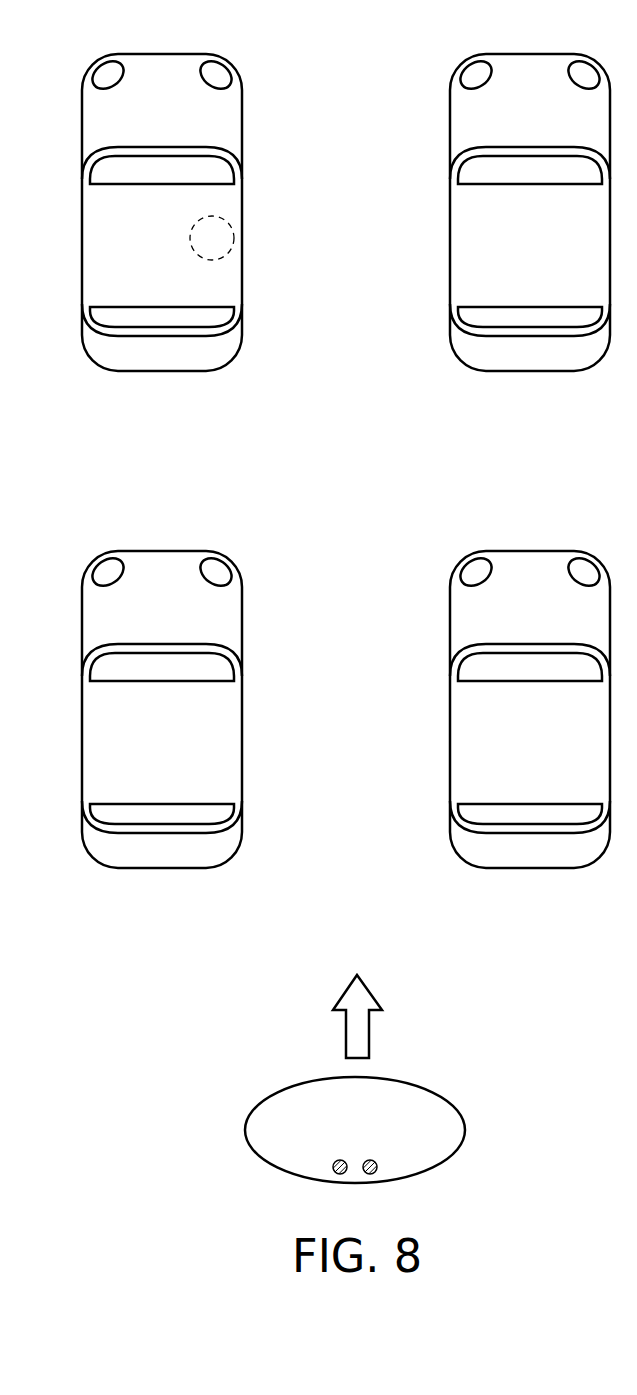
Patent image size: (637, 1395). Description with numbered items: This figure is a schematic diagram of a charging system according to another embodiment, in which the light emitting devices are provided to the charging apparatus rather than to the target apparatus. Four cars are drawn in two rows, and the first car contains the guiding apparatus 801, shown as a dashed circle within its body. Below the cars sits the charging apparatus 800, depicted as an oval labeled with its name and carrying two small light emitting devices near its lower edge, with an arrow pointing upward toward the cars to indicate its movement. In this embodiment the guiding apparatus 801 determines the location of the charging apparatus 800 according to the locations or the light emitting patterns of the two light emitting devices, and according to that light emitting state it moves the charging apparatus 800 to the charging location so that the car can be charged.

The guiding apparatus 801 is at (226, 222).
The charging apparatus 800 is at (463, 1113).